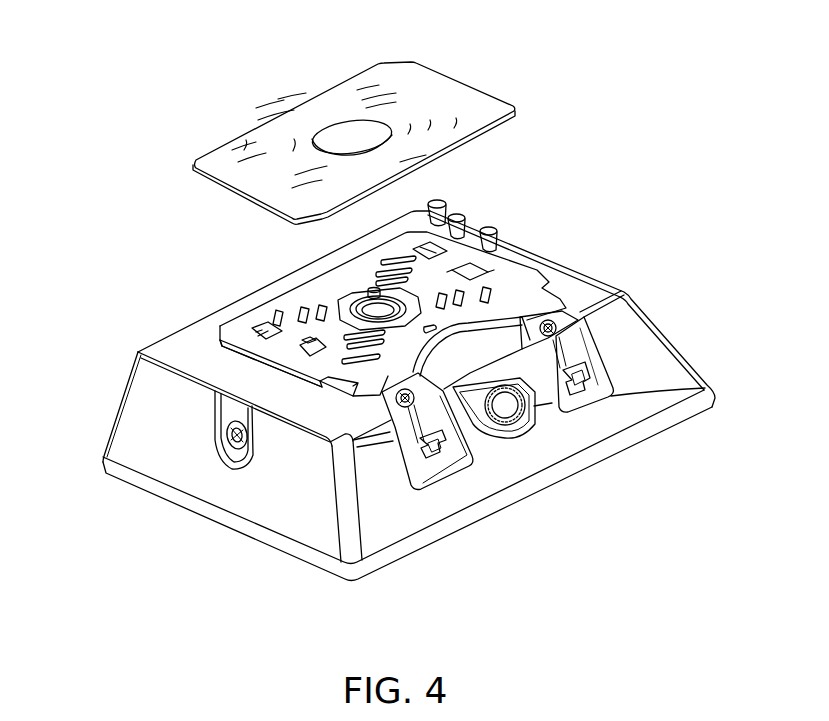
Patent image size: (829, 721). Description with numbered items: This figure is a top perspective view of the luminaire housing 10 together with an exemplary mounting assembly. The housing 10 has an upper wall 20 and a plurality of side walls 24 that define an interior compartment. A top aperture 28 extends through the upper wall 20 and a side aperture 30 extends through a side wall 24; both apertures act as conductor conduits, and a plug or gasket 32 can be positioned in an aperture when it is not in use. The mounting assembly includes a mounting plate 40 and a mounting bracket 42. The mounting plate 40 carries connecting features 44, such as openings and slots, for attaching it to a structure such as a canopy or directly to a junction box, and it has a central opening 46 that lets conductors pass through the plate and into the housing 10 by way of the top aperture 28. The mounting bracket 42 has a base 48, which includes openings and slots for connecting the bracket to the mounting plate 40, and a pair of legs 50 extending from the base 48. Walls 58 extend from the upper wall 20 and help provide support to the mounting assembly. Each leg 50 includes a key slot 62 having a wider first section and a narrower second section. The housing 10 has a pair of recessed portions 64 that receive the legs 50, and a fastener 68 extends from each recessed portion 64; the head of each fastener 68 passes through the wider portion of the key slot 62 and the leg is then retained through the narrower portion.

The housing 10 is at (412, 399).
The upper wall 20 is at (373, 399).
The side walls 24 is at (142, 494).
The top aperture 28 is at (366, 306).
The side aperture 30 is at (246, 458).
The plug or gasket 32 is at (233, 443).
The mounting plate 40 is at (332, 122).
The mounting bracket 42 is at (377, 309).
The connecting features 44 is at (277, 155).
The central opening 46 is at (393, 127).
The base 48 is at (329, 298).
The legs 50 is at (470, 495).
The walls 58 is at (232, 355).
The key slot 62 is at (583, 378).
The recessed portions 64 is at (433, 470).
The fastener 68 is at (552, 326).